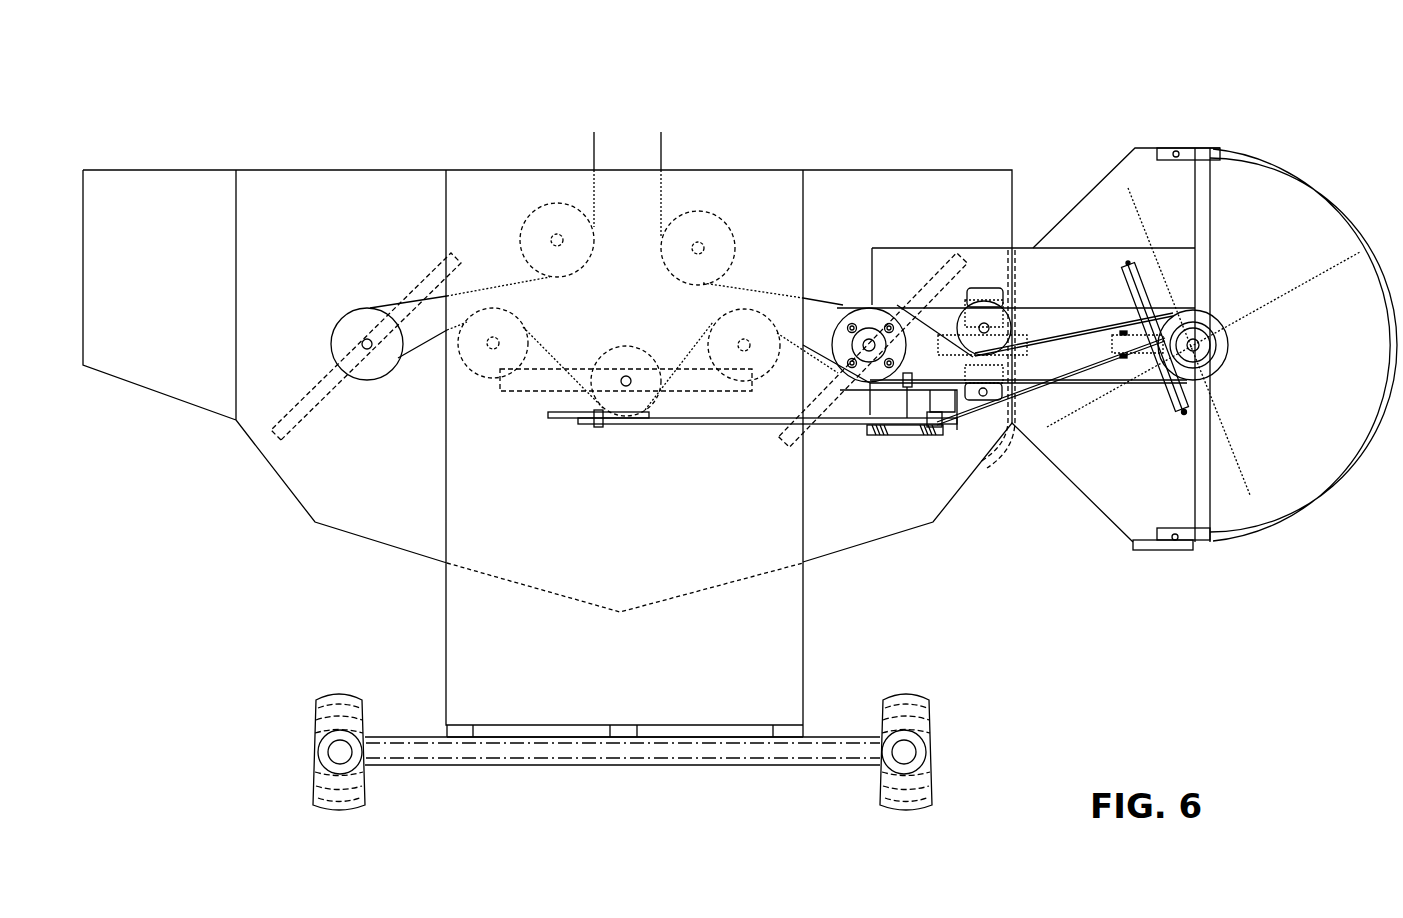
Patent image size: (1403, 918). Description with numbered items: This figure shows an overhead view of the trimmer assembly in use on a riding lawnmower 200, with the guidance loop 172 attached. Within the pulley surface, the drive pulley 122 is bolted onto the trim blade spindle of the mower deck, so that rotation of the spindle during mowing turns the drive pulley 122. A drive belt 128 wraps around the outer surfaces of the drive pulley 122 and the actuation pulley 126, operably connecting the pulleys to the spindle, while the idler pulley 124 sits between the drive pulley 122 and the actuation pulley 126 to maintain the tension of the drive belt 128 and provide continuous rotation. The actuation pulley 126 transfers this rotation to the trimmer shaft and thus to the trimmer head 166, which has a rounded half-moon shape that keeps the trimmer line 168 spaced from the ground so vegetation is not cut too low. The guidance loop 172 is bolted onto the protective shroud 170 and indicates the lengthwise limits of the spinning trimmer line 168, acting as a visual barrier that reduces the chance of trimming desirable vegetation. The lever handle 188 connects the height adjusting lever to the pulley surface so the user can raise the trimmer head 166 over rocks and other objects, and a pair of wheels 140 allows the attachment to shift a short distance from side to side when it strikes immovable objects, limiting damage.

The riding lawnmower 200 is at (639, 471).
The drive pulley 122 is at (843, 323).
The idler pulley 124 is at (975, 288).
The actuation pulley 126 is at (1230, 343).
The drive belt 128 is at (1070, 335).
The wheels 140 is at (987, 453).
The trimmer head 166 is at (1228, 360).
The trimmer line 168 is at (1292, 292).
The shroud 170 is at (1142, 173).
The guidance loop 172 is at (1280, 527).
The lever handle 188 is at (1178, 410).